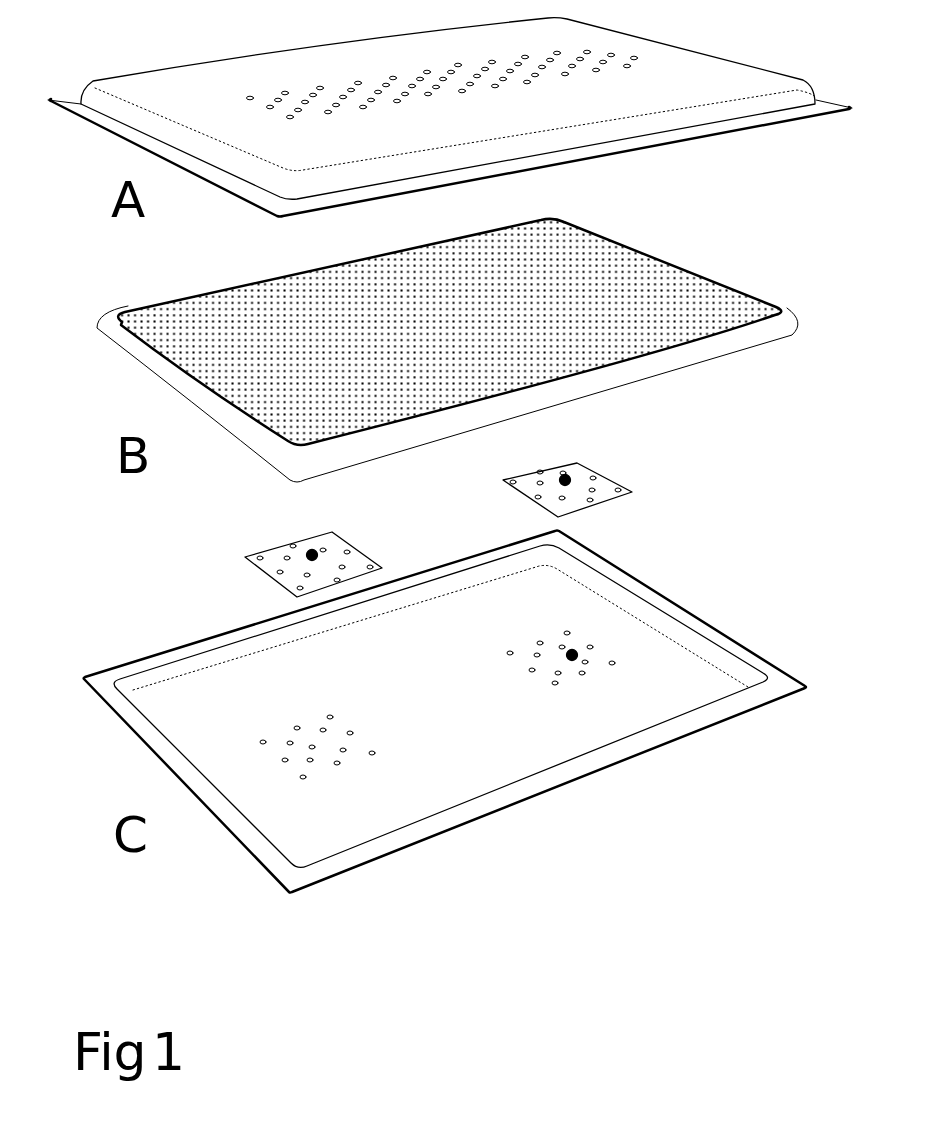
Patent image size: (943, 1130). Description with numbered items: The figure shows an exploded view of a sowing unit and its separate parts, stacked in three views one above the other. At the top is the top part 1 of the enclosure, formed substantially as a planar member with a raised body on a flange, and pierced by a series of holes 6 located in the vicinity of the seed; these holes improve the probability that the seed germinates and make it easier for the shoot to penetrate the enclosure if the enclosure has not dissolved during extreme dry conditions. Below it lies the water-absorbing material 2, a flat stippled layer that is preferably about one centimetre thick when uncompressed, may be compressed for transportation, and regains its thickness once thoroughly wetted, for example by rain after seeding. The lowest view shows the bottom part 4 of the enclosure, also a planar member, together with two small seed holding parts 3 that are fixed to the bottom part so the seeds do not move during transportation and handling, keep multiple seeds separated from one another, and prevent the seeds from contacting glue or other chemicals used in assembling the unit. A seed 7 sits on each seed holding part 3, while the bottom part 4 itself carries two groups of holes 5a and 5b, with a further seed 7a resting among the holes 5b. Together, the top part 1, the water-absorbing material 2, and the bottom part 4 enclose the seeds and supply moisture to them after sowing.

The top part 1 is at (143, 73).
The holes 6 is at (462, 62).
The water-absorbing material 2 is at (155, 300).
The seed holding part 3 is at (270, 548).
The seed 7 is at (320, 548).
The bottom part 4 is at (157, 657).
The holes 5a is at (323, 727).
The holes 5b is at (563, 640).
The seed 7a is at (583, 647).